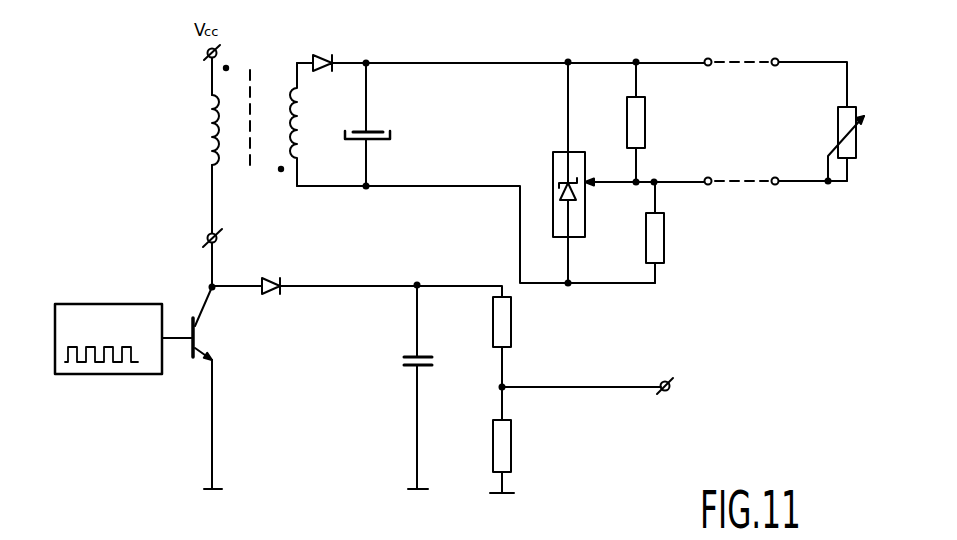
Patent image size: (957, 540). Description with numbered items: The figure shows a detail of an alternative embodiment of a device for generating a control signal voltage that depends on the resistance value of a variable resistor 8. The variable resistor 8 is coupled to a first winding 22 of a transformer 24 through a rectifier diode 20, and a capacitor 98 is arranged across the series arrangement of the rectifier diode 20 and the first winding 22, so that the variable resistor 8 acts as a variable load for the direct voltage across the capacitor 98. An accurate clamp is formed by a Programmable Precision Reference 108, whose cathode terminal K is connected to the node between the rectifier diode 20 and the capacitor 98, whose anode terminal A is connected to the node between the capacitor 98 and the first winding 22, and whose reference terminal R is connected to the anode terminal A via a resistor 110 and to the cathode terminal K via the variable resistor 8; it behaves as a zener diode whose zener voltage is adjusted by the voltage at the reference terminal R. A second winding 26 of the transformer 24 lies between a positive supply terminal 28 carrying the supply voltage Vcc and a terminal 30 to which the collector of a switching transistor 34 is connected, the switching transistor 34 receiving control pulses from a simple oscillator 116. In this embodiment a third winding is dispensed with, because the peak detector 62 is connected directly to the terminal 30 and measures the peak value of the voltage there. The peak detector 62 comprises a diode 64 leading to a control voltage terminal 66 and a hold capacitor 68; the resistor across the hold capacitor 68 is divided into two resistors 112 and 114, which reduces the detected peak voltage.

The variable resistor 8 is at (838, 120).
The rectifier diode 20 is at (320, 55).
The first winding 22 is at (292, 150).
The transformer 24 is at (262, 204).
The second winding 26 is at (212, 147).
The positive supply terminal 28 is at (219, 50).
The terminal 30 is at (220, 239).
The switching transistor 34 is at (203, 337).
The peak detector 62 is at (382, 434).
The diode 64 is at (268, 280).
The control voltage terminal 66 is at (673, 385).
The hold capacitor 68 is at (423, 367).
The capacitor 98 is at (376, 131).
The Programmable Precision Reference 108 is at (585, 224).
The resistor 110 is at (656, 232).
The resistor 112 is at (505, 325).
The resistor 114 is at (505, 441).
The oscillator 116 is at (117, 312).